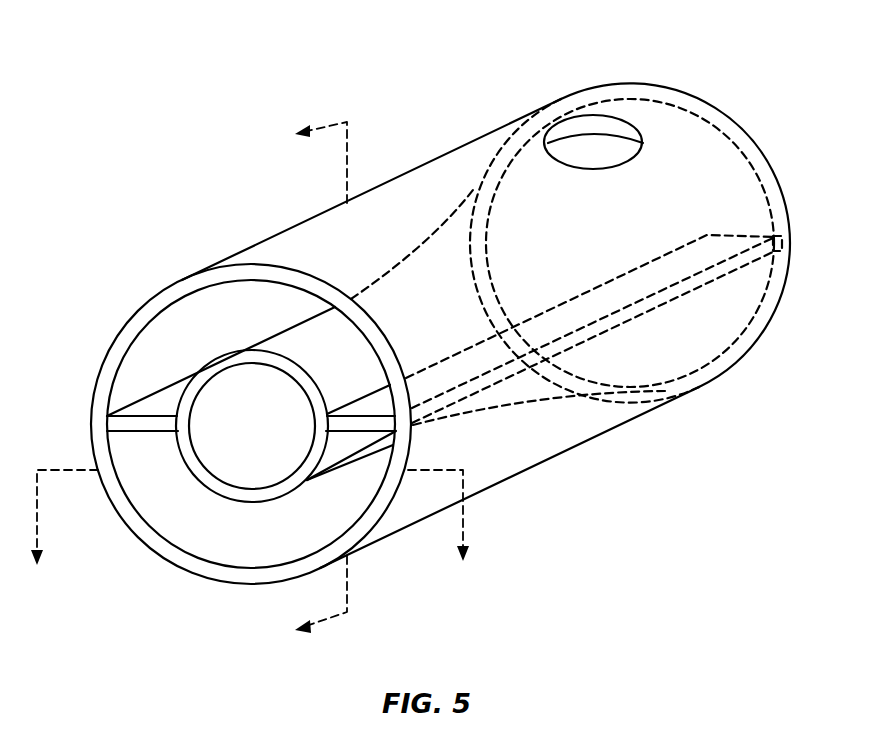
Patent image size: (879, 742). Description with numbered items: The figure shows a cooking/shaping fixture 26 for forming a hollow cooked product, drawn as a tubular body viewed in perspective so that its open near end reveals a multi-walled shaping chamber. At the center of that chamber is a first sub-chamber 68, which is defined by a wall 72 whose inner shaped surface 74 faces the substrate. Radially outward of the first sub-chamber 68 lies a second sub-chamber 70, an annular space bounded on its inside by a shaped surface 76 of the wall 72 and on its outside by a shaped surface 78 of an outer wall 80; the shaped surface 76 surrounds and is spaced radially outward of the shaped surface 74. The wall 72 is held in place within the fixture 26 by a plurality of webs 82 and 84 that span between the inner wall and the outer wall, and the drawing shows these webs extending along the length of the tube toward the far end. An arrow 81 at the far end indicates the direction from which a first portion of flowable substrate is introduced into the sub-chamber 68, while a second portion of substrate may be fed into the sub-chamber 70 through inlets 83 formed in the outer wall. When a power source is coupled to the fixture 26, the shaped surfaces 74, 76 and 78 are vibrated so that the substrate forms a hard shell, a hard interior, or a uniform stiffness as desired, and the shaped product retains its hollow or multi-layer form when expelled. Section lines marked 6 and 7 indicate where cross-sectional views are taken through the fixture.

The fixture 26 is at (297, 224).
The first sub-chamber 68 is at (272, 387).
The second sub-chamber 70 is at (248, 537).
The wall 72 is at (208, 370).
The shaped surface 74 is at (295, 468).
The shaped surface 76 is at (350, 365).
The shaped surface 78 is at (157, 349).
The wall 80 is at (104, 360).
The web 82 is at (142, 405).
The web 84 is at (383, 400).
The arrow 81 is at (750, 113).
The inlets 83 is at (595, 147).
The section line 6- 6 is at (309, 389).
The section line 7- 7 is at (250, 530).